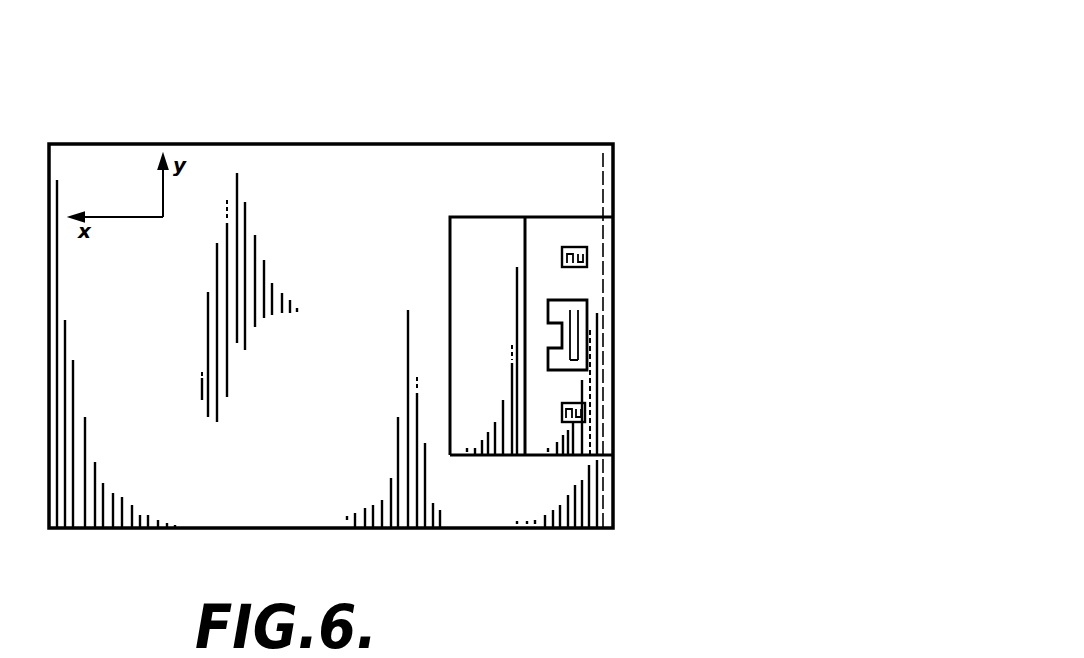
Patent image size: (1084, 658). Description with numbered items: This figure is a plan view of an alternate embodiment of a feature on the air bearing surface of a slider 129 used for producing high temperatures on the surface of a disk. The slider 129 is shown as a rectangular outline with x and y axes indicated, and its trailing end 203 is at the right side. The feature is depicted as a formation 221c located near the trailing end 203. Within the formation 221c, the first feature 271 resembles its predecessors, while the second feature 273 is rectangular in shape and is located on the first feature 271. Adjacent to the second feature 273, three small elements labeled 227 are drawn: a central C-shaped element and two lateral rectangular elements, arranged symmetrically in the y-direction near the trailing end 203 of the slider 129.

The slider 129 is at (628, 122).
The trailing end 203 is at (618, 493).
The formation 221c is at (431, 235).
The contact vias 227 is at (592, 410).
The first feature 271 is at (472, 418).
The second feature 273 is at (548, 432).